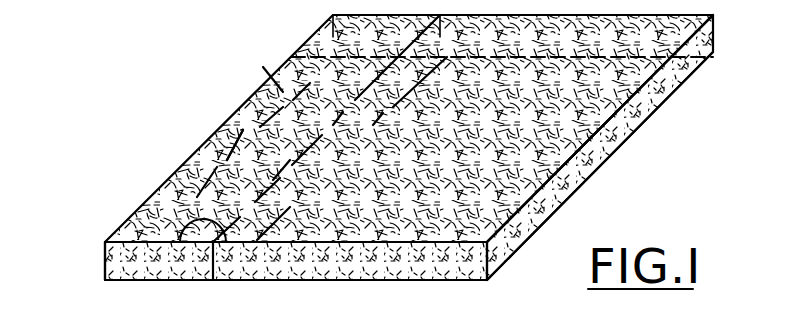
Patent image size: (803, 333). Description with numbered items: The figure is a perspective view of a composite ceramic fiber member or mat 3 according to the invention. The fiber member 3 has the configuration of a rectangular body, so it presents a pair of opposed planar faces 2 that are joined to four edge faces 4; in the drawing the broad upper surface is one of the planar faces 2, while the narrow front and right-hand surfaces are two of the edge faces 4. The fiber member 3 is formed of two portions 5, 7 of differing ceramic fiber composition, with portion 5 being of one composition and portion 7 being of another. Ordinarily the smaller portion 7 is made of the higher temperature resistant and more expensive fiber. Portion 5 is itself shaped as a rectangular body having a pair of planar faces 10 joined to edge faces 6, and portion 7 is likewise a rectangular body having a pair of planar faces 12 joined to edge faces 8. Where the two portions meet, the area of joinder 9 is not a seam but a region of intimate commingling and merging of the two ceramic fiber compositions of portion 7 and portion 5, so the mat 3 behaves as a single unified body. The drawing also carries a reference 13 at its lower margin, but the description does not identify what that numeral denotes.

The planar faces 2 is at (550, 168).
The composite ceramic fiber member 3 is at (128, 161).
The edge faces 4 is at (470, 15).
The portion 5 is at (630, 85).
The edge faces 6 is at (460, 264).
The portion 7 is at (285, 91).
The edge faces 8 is at (104, 257).
The area of joinder 9 is at (180, 230).
The planar faces 10 is at (600, 180).
The planar faces 12 is at (257, 147).
The bottom surface 13 is at (296, 306).